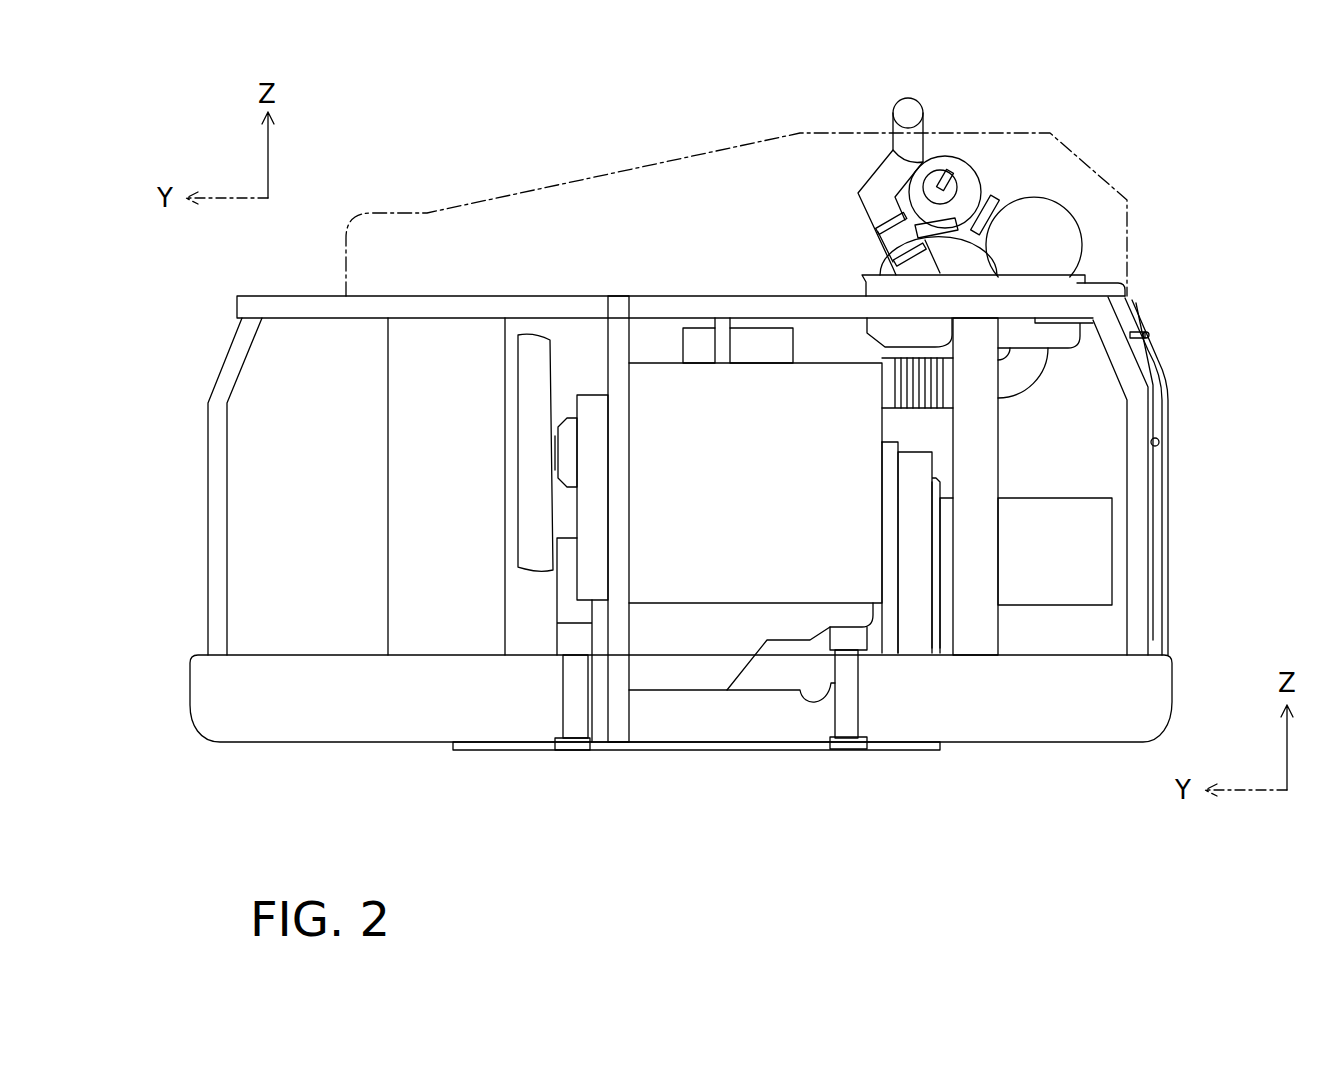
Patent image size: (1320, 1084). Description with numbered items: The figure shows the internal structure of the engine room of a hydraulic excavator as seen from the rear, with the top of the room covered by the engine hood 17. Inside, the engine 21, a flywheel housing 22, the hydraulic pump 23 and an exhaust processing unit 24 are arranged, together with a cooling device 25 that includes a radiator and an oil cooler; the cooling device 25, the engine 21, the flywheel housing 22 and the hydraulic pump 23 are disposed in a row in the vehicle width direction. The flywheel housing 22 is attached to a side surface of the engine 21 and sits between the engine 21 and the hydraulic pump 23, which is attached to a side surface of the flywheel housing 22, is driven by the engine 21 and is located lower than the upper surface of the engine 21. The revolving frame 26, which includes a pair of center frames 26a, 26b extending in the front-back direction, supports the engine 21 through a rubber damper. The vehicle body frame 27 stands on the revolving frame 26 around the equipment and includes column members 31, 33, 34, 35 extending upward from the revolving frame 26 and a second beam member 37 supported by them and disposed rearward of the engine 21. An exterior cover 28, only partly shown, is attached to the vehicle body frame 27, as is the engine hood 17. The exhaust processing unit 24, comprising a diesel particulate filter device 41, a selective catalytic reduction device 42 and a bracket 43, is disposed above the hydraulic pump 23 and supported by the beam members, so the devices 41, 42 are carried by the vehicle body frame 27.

The engine hood 17 is at (710, 150).
The engine 21 is at (757, 567).
The flywheel housing 22 is at (913, 643).
The hydraulic pump 23 is at (1033, 590).
The exhaust processing unit 24 is at (971, 148).
The cooling device 25 is at (416, 350).
The revolving frame 26 is at (535, 775).
The center frame 26a is at (575, 708).
The center frame 26b is at (847, 707).
The vehicle body frame 27 is at (592, 263).
The exterior cover 28 is at (1160, 362).
The column member 31 is at (1138, 503).
The column member 33 is at (972, 625).
The column member 34 is at (618, 732).
The column member 35 is at (218, 432).
The second beam member 37 is at (787, 293).
The diesel particulate filter device 41 is at (1067, 203).
The selective catalytic reduction device 42 is at (883, 260).
The bracket 43 is at (1077, 290).